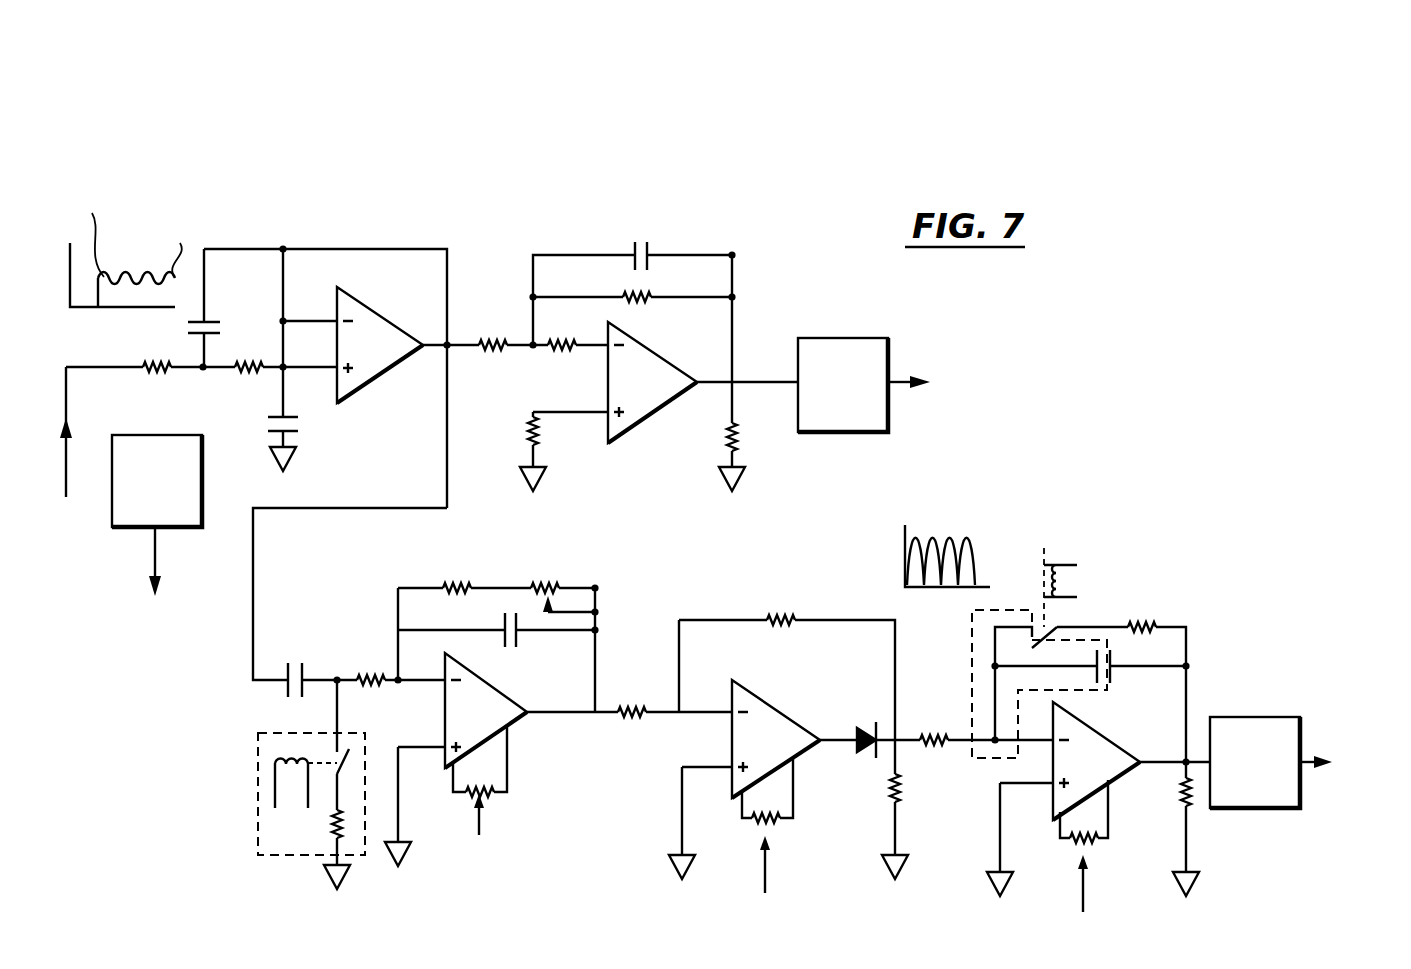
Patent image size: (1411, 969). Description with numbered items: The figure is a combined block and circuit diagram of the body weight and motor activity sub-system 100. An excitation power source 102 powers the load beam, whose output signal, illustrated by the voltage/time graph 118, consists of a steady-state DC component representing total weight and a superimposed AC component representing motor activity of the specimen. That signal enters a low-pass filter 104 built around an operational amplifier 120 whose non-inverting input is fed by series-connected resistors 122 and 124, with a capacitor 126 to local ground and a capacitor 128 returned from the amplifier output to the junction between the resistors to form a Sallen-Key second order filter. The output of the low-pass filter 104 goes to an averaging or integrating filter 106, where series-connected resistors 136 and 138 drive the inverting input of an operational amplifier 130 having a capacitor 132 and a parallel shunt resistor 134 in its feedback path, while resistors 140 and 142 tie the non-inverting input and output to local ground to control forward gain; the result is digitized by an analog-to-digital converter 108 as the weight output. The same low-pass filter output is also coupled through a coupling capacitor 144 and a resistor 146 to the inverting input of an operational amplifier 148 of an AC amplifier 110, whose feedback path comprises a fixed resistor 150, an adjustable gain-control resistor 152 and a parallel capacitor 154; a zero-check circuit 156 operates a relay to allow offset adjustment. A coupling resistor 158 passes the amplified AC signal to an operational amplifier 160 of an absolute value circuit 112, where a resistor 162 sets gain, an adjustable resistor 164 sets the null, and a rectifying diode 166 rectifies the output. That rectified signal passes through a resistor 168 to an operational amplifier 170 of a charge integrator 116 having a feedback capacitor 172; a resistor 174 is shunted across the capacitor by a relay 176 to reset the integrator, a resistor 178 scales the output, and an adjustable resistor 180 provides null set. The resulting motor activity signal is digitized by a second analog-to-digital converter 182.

The body weight and motor activity sub-system 100 is at (984, 456).
The excitation power source 102 is at (173, 528).
The low-pass filter 104 is at (410, 232).
The averaging or integrating filter 106 is at (736, 228).
The analog-to-digital converter 108 is at (870, 338).
The AC amplifier 110 is at (510, 550).
The absolute value circuit 112 is at (752, 578).
The integrator 116 is at (1192, 566).
The voltage/time graph 118 is at (216, 203).
The operational amplifier 120 is at (376, 311).
The resistor 122 is at (152, 374).
The resistor 124 is at (250, 374).
The capacitor 126 is at (268, 420).
The capacitor 128 is at (208, 320).
The operational amplifier 130 is at (644, 344).
The capacitor 132 is at (636, 243).
The shunt resistor 134 is at (624, 294).
The resistor 136 is at (494, 352).
The resistor 138 is at (564, 352).
The resistor 140 is at (527, 433).
The resistor 142 is at (726, 436).
The coupling capacitor 144 is at (304, 664).
The resistor 146 is at (368, 688).
The operational amplifier 148 is at (500, 693).
The fixed resistor 150 is at (450, 582).
The adjustable gain-control resistor 152 is at (554, 582).
The capacitor 154 is at (503, 622).
The zero-check circuit 156 is at (258, 790).
The coupling resistor 158 is at (619, 718).
The operational amplifier 160 is at (778, 704).
The resistor 162 is at (790, 614).
The adjustable resistor 164 is at (775, 824).
The rectifying diode 166 is at (866, 753).
The resistor 168 is at (938, 748).
The operational amplifier 170 is at (1098, 740).
The capacitor 172 is at (1112, 674).
The resistor 174 is at (1150, 623).
The relay 176 is at (1061, 551).
The resistor 178 is at (1196, 808).
The adjustable resistor 180 is at (1093, 842).
The analog-to-digital converter 182 is at (1273, 717).